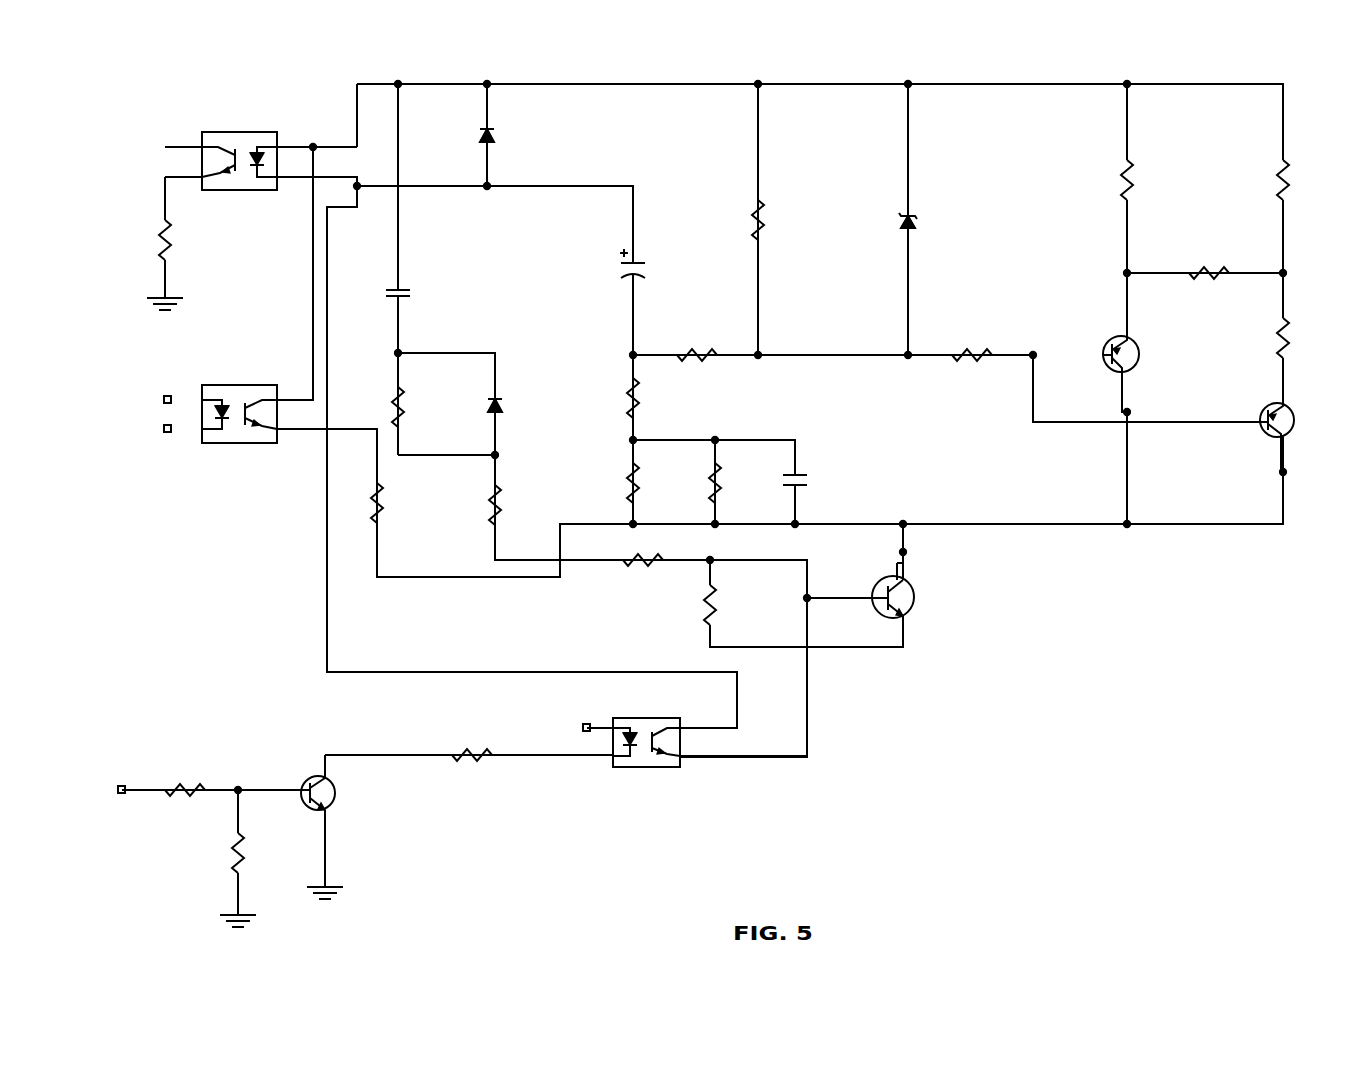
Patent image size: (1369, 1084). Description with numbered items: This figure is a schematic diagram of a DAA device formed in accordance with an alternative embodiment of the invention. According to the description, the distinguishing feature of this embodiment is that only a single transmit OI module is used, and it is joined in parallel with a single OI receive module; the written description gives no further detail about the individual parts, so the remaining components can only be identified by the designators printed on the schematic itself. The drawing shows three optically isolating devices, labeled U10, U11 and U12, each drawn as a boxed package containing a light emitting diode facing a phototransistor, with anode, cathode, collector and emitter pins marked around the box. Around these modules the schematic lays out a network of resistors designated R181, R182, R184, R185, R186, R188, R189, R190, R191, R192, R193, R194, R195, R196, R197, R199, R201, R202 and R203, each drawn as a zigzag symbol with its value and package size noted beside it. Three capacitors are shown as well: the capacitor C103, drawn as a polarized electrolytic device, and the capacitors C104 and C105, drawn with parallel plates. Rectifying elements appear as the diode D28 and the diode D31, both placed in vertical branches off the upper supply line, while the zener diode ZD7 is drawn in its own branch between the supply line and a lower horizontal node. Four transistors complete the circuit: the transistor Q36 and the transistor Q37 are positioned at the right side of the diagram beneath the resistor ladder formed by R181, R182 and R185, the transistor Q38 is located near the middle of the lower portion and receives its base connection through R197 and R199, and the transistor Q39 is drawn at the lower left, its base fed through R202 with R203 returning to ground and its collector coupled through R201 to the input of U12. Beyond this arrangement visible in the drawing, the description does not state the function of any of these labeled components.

The optocoupler U10 LTV8165-TA1-DSC U10 is at (239, 160).
The optocoupler U11 LTV8165-TA1-DSC U11 is at (239, 410).
The optocoupler U12 is at (645, 745).
The resistor R184 47K R184 is at (165, 258).
The resistor R186 82K R186 is at (760, 231).
The resistor R188 6K8 R188 is at (686, 361).
The resistor R189 10R R189 is at (957, 359).
The resistor R181 is at (1121, 189).
The resistor R182 is at (1278, 191).
The resistor R185 is at (1193, 273).
The resistor R190 is at (1276, 348).
The resistor R191 is at (626, 410).
The resistor R192 470K R192 is at (410, 411).
The resistor R193 is at (626, 494).
The resistor R194 is at (706, 494).
The resistor R195 47R R195 is at (391, 517).
The resistor R196 47R R196 is at (496, 516).
The resistor R197 is at (626, 560).
The resistor R199 is at (702, 615).
The resistor R201 is at (455, 759).
The resistor R202 is at (170, 792).
The resistor R203 is at (232, 862).
The electrolytic capacitor C103 22U/50V C103 is at (636, 269).
The capacitor C104 220NF 250V C104 is at (405, 293).
The capacitor C105 is at (785, 500).
The diode D28 1N4148 D28 is at (498, 145).
The diode D31 1N4148 D31 is at (501, 420).
The zener diode ZD7 is at (915, 230).
The transistor Q36 PZT2907A Q36 is at (1123, 364).
The transistor Q37 is at (1255, 433).
The transistor Q38 NZT7053 Q38 is at (901, 595).
The transistor Q39 is at (293, 801).